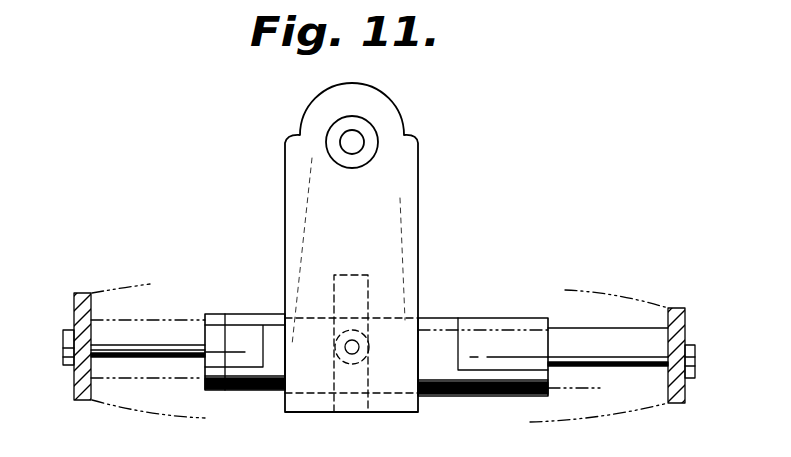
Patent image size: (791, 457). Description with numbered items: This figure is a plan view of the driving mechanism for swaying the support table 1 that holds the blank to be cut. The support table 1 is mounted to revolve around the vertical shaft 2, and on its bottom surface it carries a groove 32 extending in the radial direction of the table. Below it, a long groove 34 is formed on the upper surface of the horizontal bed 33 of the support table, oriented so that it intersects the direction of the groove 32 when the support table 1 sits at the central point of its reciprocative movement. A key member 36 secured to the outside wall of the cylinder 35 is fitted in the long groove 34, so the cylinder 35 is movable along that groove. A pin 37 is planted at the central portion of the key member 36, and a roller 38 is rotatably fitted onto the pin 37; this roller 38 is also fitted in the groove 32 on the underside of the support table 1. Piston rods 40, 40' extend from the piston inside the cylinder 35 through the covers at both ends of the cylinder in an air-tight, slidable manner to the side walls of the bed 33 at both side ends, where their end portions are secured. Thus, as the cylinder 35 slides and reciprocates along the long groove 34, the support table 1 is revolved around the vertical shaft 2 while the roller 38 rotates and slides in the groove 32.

The support table 1 is at (420, 206).
The vertical shaft 2 is at (357, 141).
The groove 32 is at (352, 402).
The horizontal bed 33 is at (158, 397).
The long groove 34 is at (615, 388).
The cylinder 35 is at (503, 318).
The key member 36 is at (445, 373).
The pin 37 is at (350, 345).
The roller 38 is at (362, 338).
The piston rod 40 is at (148, 312).
The piston rod 40' is at (608, 317).